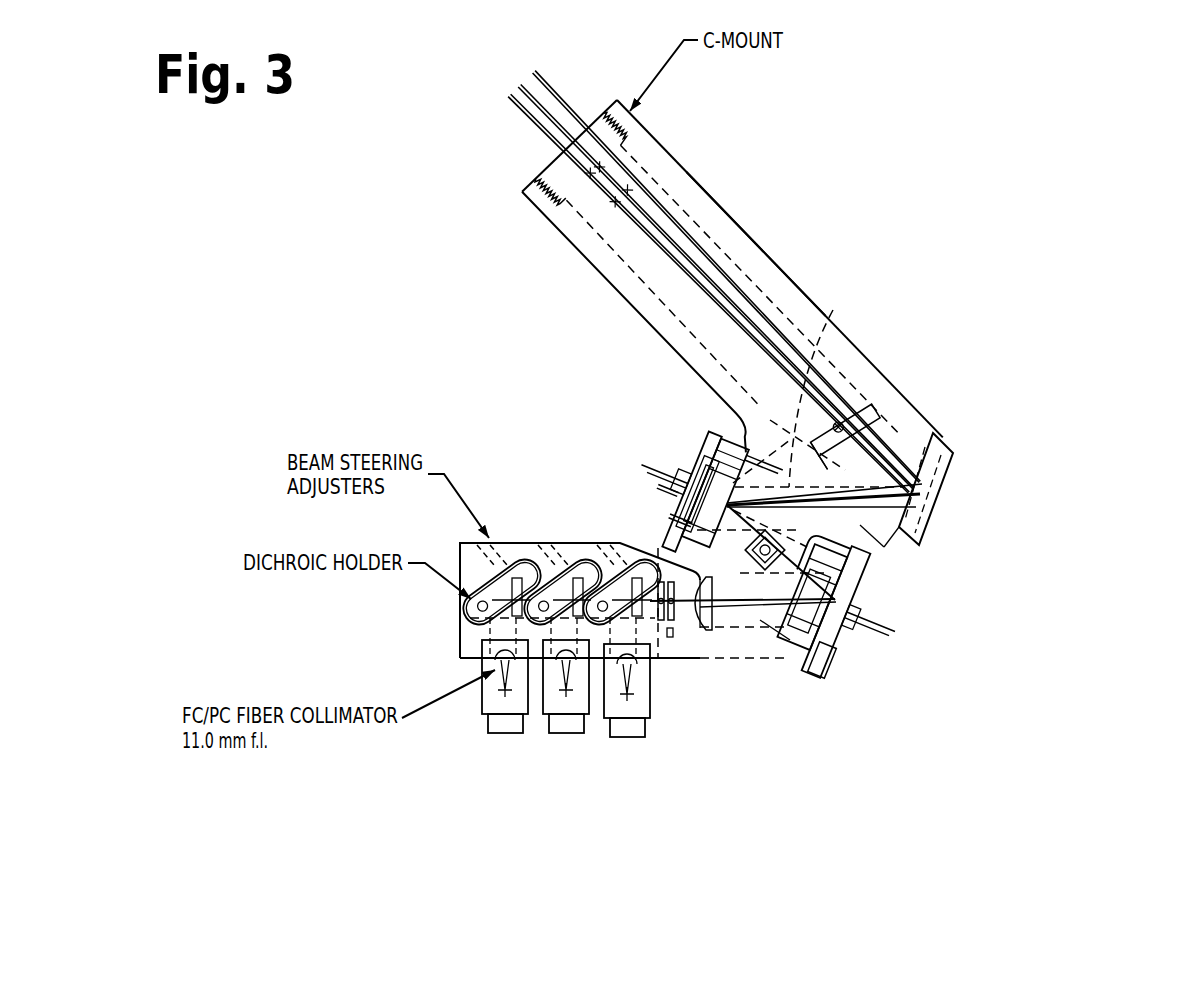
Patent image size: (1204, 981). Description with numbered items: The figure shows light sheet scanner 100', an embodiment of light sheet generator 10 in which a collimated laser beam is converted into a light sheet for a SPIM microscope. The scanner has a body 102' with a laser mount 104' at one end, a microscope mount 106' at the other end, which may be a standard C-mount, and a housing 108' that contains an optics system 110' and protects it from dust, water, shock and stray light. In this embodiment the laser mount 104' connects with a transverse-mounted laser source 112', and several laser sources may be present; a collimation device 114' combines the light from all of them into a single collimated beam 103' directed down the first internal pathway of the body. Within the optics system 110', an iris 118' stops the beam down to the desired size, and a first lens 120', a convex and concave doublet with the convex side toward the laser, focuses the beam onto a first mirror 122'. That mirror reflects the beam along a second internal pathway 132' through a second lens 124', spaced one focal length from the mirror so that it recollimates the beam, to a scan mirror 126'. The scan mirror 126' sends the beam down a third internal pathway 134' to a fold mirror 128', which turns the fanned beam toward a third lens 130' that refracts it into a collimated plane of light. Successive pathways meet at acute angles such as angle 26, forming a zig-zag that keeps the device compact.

The light sheet generator 10 is at (972, 150).
The light sheet scanner 100' is at (981, 65).
The body 102' is at (757, 277).
The beam 103' is at (787, 662).
The laser mount 104' is at (573, 601).
The microscope mount 106' is at (736, 255).
The housing 108' is at (770, 229).
The optics system 110' is at (939, 522).
The laser source 112' is at (566, 732).
The collimation device 114' is at (514, 592).
The iris 118' is at (749, 681).
The first lens 120' is at (815, 665).
The first mirror 122' is at (956, 613).
The second lens 124' is at (911, 482).
The scan mirror 126' is at (608, 472).
The fold mirror 128' is at (961, 483).
The third lens 130' is at (920, 367).
The second internal pathway 132' is at (832, 669).
The third internal pathway 134' is at (801, 455).
The angle 26 is at (752, 610).